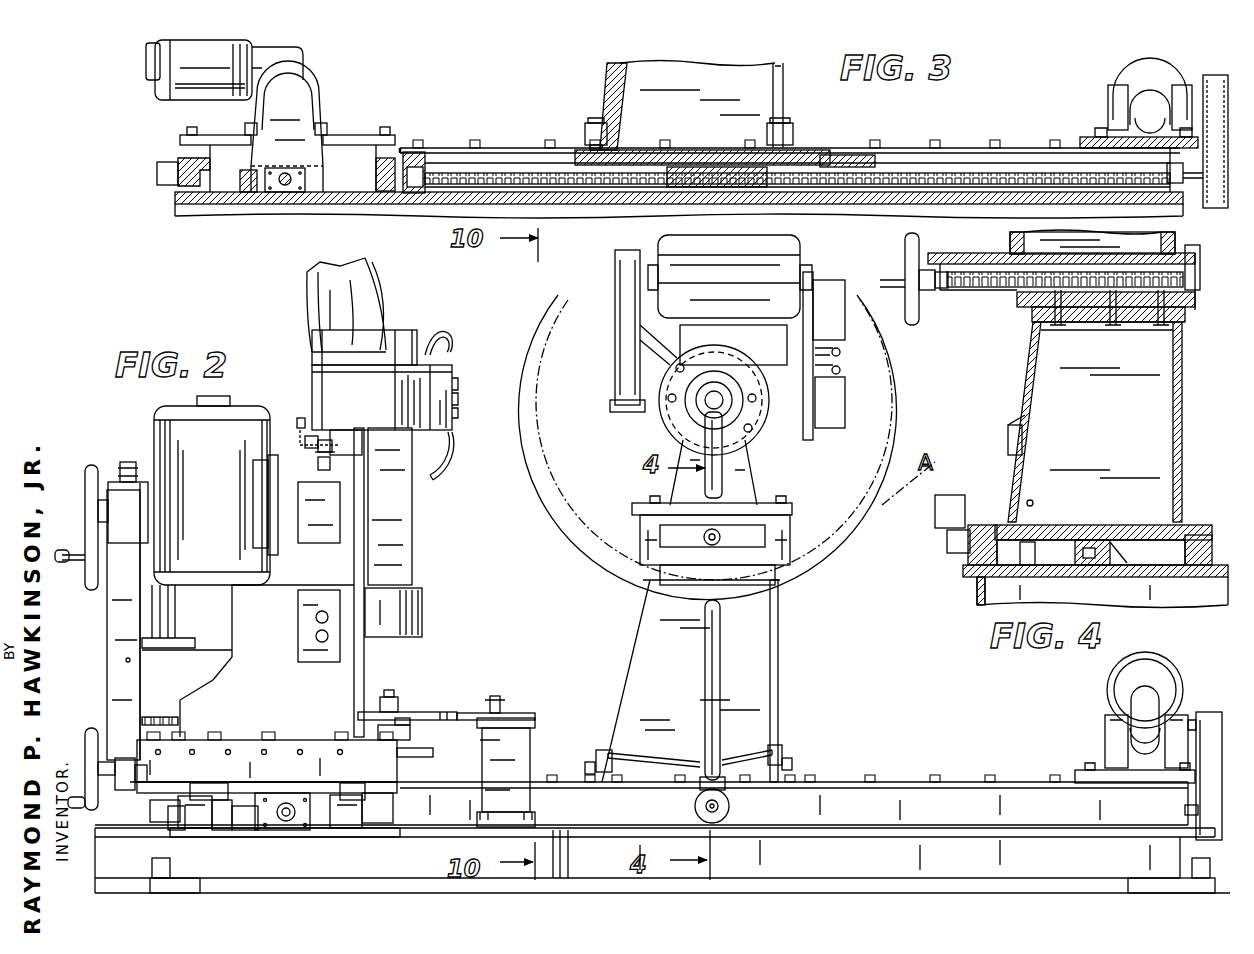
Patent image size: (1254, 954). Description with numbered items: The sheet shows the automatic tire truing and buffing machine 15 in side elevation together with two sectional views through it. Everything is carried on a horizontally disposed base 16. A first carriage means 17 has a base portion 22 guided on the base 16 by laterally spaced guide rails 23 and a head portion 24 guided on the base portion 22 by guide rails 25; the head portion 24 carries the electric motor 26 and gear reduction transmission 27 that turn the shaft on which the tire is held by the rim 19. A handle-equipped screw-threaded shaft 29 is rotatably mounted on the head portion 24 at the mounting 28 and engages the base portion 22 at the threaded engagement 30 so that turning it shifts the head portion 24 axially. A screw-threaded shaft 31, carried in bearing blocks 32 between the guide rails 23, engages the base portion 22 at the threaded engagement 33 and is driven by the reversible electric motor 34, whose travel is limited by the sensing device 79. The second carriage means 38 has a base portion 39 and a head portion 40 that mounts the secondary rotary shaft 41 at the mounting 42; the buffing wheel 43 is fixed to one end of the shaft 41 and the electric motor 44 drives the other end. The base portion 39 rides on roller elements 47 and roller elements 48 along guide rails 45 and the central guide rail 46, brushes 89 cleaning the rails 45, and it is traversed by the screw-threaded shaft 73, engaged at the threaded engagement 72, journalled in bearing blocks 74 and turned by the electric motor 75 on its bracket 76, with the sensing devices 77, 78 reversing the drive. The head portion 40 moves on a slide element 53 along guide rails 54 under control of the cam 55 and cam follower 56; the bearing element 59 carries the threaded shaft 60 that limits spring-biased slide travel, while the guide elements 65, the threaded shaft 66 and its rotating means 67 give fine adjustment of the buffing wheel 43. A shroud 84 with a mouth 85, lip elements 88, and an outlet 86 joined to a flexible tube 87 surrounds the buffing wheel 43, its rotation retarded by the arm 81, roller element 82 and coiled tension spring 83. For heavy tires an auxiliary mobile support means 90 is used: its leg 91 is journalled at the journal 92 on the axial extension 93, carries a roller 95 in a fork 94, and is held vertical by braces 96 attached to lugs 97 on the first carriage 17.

In FIG. 2, the tire truing and buffing machine 15 is at (137, 415).
In FIG. 3, the base 16 is at (195, 205).
In FIG. 4, the base 16 is at (978, 598).
In FIG. 2, the base 16 is at (905, 828).
In FIG. 3, the first carriage means 17 is at (615, 82).
In FIG. 4, the first carriage means 17 is at (1178, 445).
In FIG. 2, the first carriage means 17 is at (777, 667).
In FIG. 2, the tire holding apparatus or rim 19 is at (680, 405).
In FIG. 3, the base portion 22 is at (780, 98).
In FIG. 4, the base portion 22 is at (1027, 388).
In FIG. 2, the base portion 22 is at (640, 657).
In FIG. 3, the guide rails 23 is at (903, 148).
In FIG. 4, the guide rails 23 is at (967, 558).
In FIG. 2, the guide rails 23 is at (880, 800).
In FIG. 4, the head portion 24 is at (1012, 240).
In FIG. 2, the head portion 24 is at (740, 488).
In FIG. 4, the guide rails 25 is at (1197, 282).
In FIG. 2, the guide rails 25 is at (640, 518).
In FIG. 2, the electric motor 26 is at (772, 257).
In FIG. 2, the gear reduction transmission 27 is at (690, 417).
In FIG. 4, the rotatable mounting 28 is at (943, 290).
In FIG. 4, the screw-threaded shaft 29 is at (1003, 285).
In FIG. 2, the screw-threaded shaft 29 is at (710, 545).
In FIG. 4, the screw-threaded engagement 30 is at (1105, 285).
In FIG. 2, the screw-threaded engagement 30 is at (717, 545).
In FIG. 3, the screw-threaded shaft 31 is at (823, 160).
In FIG. 4, the screw-threaded shaft 31 is at (1090, 555).
In FIG. 2, the screw-threaded shaft 31 is at (1187, 810).
In FIG. 3, the bearing blocks 32 is at (400, 157).
In FIG. 4, the bearing blocks 32 is at (1070, 553).
In FIG. 3, the threaded engagement 33 is at (703, 170).
In FIG. 4, the threaded engagement 33 is at (1093, 553).
In FIG. 3, the electric motor 34 is at (1113, 62).
In FIG. 4, the electric motor 34 is at (1008, 427).
In FIG. 2, the electric motor 34 is at (1110, 692).
In FIG. 2, the second carriage means 38 is at (428, 522).
In FIG. 2, the base portion 39 is at (273, 757).
In FIG. 2, the head portion 40 is at (362, 672).
In FIG. 2, the secondary rotary shaft 41 is at (397, 580).
In FIG. 2, the rotatable mounting 42 is at (395, 500).
In FIG. 2, the buffing wheel 43 is at (453, 388).
In FIG. 2, the electric motor 44 is at (217, 514).
In FIG. 3, the guide rails 45 is at (178, 187).
In FIG. 2, the guide rails 45 is at (177, 820).
In FIG. 3, the guide rail 46 is at (250, 192).
In FIG. 2, the guide rail 46 is at (245, 823).
In FIG. 2, the roller elements 47 is at (213, 793).
In FIG. 2, the roller elements 48 is at (223, 823).
In FIG. 2, the slide element 53 is at (433, 753).
In FIG. 2, the guide rails 54 is at (238, 737).
In FIG. 2, the cam 55 is at (477, 710).
In FIG. 2, the cam follower 56 is at (435, 710).
In FIG. 2, the bearing element 59 is at (125, 777).
In FIG. 2, the threaded shaft 60 is at (138, 768).
In FIG. 2, the guide elements 65 is at (403, 740).
In FIG. 2, the threaded shaft 66 is at (158, 715).
In FIG. 2, the means for rotating 67 is at (117, 597).
In FIG. 2, the threaded engagement 72 is at (287, 793).
In FIG. 3, the screw-threaded shaft 73 is at (287, 190).
In FIG. 2, the screw-threaded shaft 73 is at (282, 820).
In FIG. 3, the bearing blocks 74 is at (312, 190).
In FIG. 2, the bearing blocks 74 is at (313, 820).
In FIG. 3, the electric motor 75 is at (178, 87).
In FIG. 3, the bracket 76 is at (357, 135).
In FIG. 3, the sensing device 77 is at (157, 174).
In FIG. 2, the sensing device 78 is at (155, 813).
In FIG. 4, the sensing device 79 is at (950, 543).
In FIG. 2, the arm 81 is at (298, 442).
In FIG. 2, the roller element 82 is at (303, 420).
In FIG. 2, the coiled tension spring 83 is at (333, 433).
In FIG. 2, the shroud 84 is at (395, 411).
In FIG. 2, the mouth 85 is at (457, 418).
In FIG. 2, the outlet 86 is at (380, 362).
In FIG. 2, the flexible tube 87 is at (313, 287).
In FIG. 2, the lip elements 88 is at (447, 348).
In FIG. 2, the brushes 89 is at (203, 820).
In FIG. 2, the auxiliary mobile support means 90 is at (705, 687).
In FIG. 2, the leg 91 is at (705, 478).
In FIG. 2, the journal 92 is at (687, 405).
In FIG. 2, the axial extension 93 is at (733, 425).
In FIG. 2, the fork 94 is at (697, 793).
In FIG. 2, the roller 95 is at (728, 808).
In FIG. 2, the braces 96 is at (660, 753).
In FIG. 2, the lugs 97 is at (610, 757).